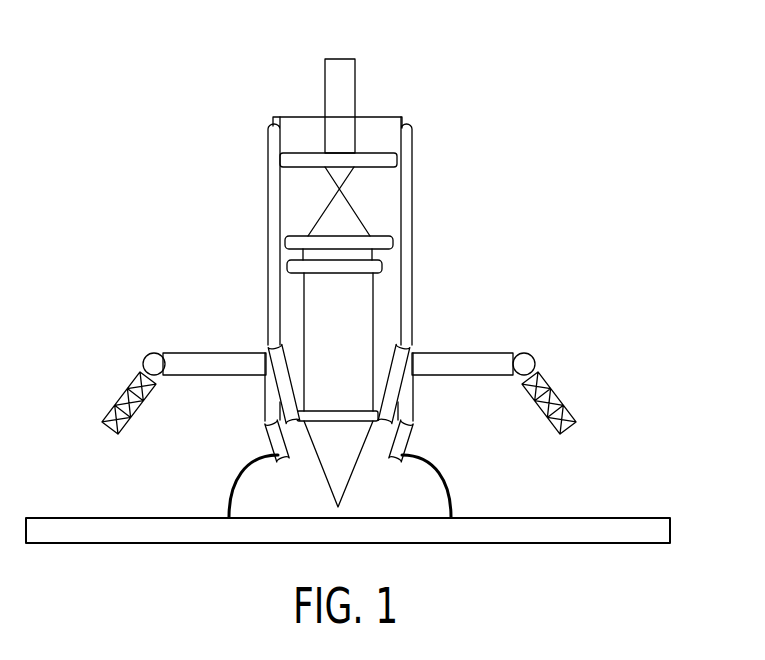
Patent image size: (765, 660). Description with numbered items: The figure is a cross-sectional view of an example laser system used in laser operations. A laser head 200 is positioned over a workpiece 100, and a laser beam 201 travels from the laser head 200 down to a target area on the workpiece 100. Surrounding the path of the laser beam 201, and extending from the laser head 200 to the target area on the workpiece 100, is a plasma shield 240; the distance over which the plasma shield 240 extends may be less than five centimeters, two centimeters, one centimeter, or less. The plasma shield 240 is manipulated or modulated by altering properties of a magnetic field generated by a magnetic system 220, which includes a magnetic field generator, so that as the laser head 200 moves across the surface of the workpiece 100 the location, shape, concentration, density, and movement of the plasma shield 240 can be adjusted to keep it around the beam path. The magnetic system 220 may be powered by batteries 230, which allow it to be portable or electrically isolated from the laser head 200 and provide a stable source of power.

The workpiece 100 is at (472, 515).
The laser head 200 is at (443, 227).
The laser beam 201 is at (357, 90).
The magnetic system 220 is at (140, 357).
The batteries 230 is at (482, 352).
The plasma shield 240 is at (437, 467).